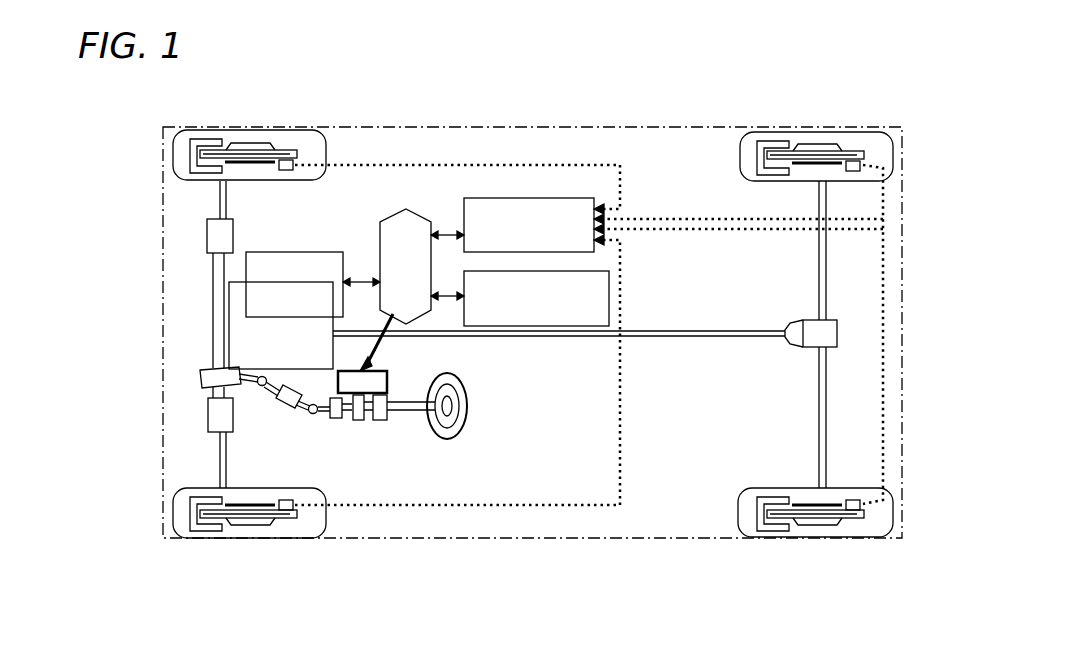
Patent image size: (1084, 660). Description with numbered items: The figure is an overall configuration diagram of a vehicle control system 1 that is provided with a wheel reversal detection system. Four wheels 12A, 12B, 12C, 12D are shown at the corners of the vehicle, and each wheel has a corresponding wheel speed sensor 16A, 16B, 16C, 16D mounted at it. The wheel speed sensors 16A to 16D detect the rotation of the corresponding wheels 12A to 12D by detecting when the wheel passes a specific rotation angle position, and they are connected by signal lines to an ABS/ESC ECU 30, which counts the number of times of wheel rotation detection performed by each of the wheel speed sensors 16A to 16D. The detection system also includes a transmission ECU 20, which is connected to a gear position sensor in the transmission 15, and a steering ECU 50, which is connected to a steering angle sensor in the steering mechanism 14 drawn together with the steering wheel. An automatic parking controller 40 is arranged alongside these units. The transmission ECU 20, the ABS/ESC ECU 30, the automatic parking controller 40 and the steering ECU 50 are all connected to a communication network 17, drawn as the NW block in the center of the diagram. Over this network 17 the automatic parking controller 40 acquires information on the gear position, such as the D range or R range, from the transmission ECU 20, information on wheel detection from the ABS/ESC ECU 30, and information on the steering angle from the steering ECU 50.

The vehicle control system 1 is at (600, 77).
The wheel 12A is at (240, 130).
The wheel 12B is at (285, 538).
The wheel 12C is at (752, 132).
The wheel 12D is at (748, 537).
The steering mechanism 14 is at (342, 420).
The transmission 15 is at (236, 281).
The wheel speed sensor 16A is at (288, 160).
The wheel speed sensor 16B is at (290, 510).
The wheel speed sensor 16C is at (853, 161).
The wheel speed sensor 16D is at (855, 510).
The communication network 17 is at (420, 217).
The transmission ECU 20 is at (310, 252).
The ABS/ESC ECU 30 is at (500, 200).
The automatic parking controller 40 is at (610, 302).
The steering ECU 50 is at (388, 374).